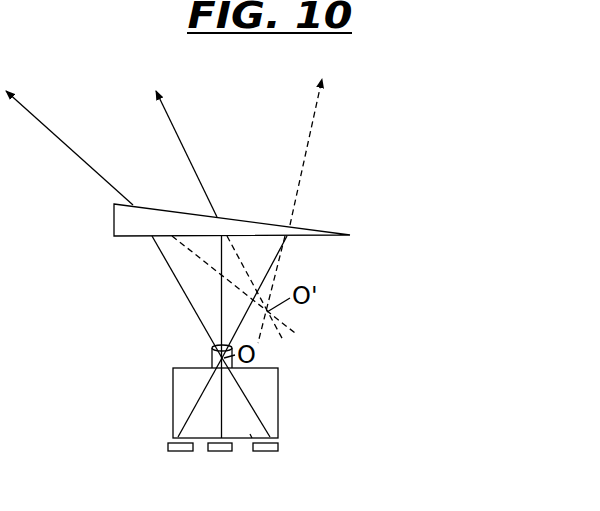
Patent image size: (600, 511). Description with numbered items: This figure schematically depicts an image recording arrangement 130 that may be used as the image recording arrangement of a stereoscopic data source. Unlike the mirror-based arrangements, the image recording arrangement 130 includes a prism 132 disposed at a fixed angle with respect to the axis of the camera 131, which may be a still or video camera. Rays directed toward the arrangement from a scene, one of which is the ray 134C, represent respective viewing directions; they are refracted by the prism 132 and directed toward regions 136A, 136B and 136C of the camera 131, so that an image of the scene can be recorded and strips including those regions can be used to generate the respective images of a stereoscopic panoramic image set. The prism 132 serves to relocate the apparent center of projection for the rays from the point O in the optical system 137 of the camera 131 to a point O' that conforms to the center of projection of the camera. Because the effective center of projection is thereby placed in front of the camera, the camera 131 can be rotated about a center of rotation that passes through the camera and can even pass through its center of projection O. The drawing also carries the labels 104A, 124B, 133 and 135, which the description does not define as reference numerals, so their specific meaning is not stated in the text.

The light beam 104A is at (300, 188).
The light beam 124B is at (197, 168).
The ray 134C is at (72, 150).
The image recording arrangement 130 is at (107, 478).
The camera 131 is at (173, 397).
The prism 132 is at (114, 225).
The optical axis 133 is at (225, 422).
The emission point 135 is at (250, 434).
The region 136A is at (168, 444).
The region 136B is at (220, 450).
The region 136C is at (282, 446).
The optical system 137 is at (212, 358).